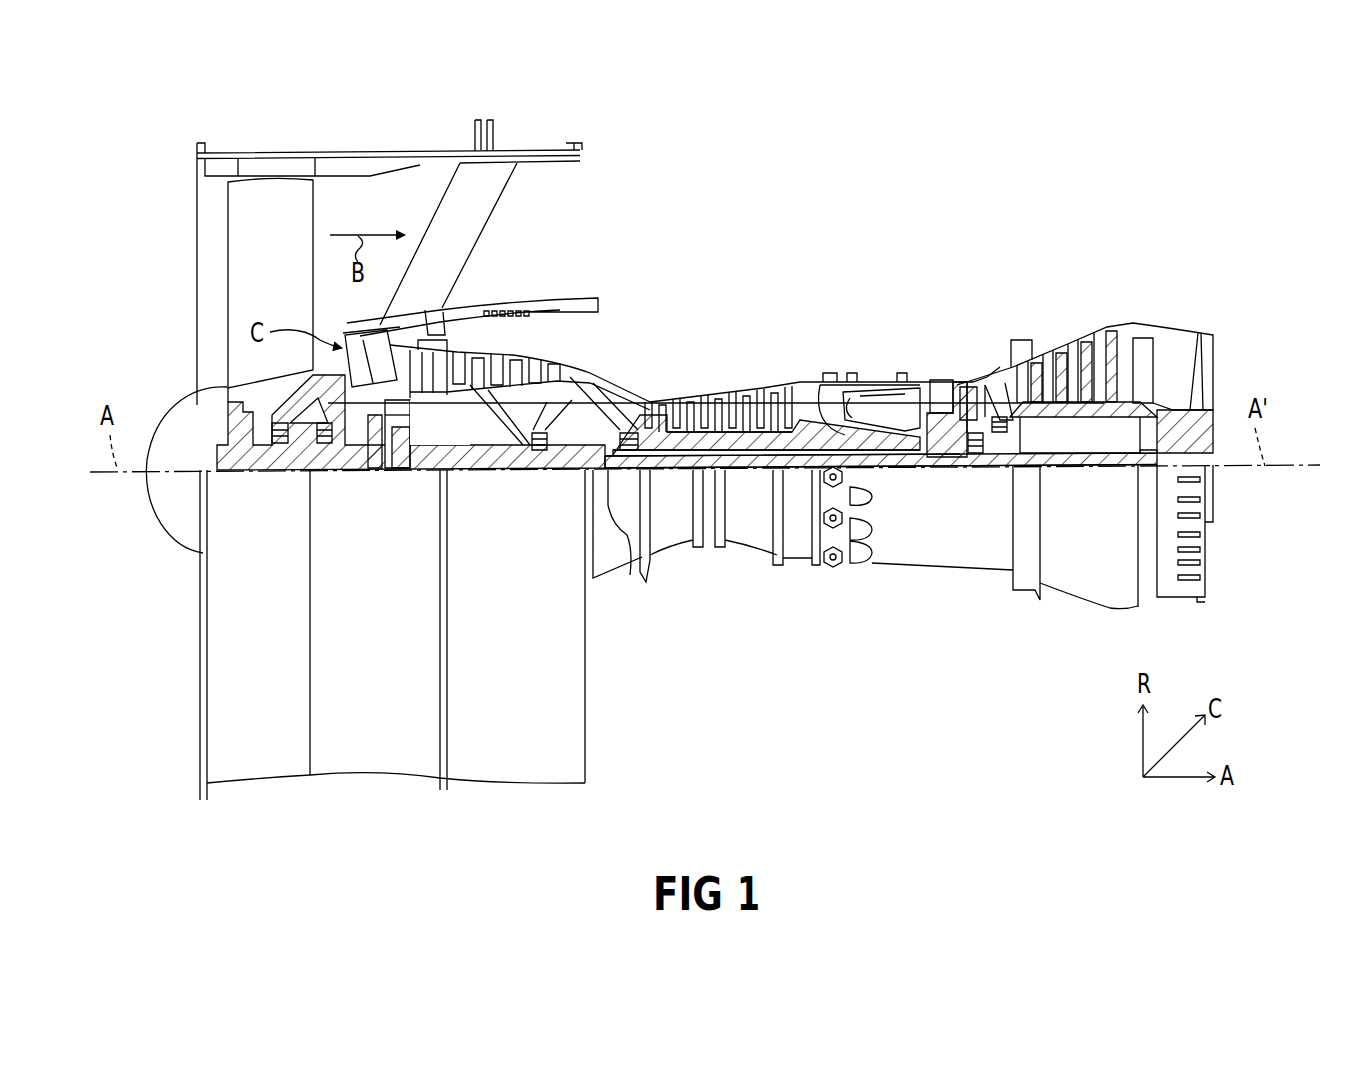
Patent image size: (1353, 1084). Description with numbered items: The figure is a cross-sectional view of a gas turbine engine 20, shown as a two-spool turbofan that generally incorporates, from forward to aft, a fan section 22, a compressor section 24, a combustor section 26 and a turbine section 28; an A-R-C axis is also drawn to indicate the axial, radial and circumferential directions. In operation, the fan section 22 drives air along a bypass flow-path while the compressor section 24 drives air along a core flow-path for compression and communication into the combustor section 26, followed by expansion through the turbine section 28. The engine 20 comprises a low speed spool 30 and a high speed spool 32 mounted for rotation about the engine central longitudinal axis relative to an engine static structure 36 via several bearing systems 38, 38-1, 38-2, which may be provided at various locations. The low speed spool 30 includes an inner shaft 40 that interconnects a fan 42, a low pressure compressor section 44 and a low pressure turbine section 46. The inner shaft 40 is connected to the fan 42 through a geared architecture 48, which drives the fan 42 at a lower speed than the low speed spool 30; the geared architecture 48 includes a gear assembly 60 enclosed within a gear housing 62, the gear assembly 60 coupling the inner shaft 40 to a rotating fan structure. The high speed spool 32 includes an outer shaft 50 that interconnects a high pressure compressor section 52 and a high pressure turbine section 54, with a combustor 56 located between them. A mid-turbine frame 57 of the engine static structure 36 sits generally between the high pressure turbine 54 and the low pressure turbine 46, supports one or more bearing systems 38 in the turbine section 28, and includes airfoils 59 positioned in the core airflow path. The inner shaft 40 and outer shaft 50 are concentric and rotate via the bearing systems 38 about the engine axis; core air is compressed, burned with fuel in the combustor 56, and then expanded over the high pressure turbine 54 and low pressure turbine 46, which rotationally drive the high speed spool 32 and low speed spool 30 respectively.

The gas turbine engine 20 is at (922, 186).
The fan section 22 is at (435, 130).
The compressor section 24 is at (445, 263).
The combustor section 26 is at (925, 261).
The turbine section 28 is at (1141, 263).
The low speed spool 30 is at (757, 482).
The high speed spool 32 is at (795, 432).
The engine static structure 36 is at (373, 760).
The bearing system 38 is at (982, 445).
The bearing system 38-1 is at (286, 446).
The bearing system 38-2 is at (541, 454).
The inner shaft 40 is at (610, 470).
The fan 42 is at (280, 282).
The low pressure compressor section 44 is at (515, 362).
The low pressure turbine section 46 is at (1075, 345).
The geared architecture 48 is at (400, 492).
The outer shaft 50 is at (873, 456).
The high pressure compressor section 52 is at (740, 428).
The high pressure turbine section 54 is at (940, 382).
The combustor 56 is at (872, 400).
The mid-turbine frame 57 is at (975, 380).
The airfoils 59 is at (1010, 367).
The gear assembly 60 is at (410, 455).
The gear housing 62 is at (405, 410).